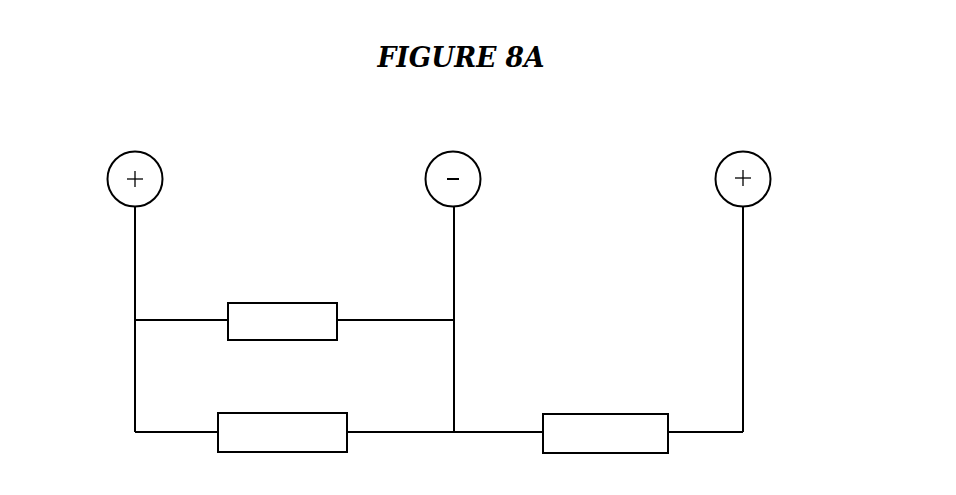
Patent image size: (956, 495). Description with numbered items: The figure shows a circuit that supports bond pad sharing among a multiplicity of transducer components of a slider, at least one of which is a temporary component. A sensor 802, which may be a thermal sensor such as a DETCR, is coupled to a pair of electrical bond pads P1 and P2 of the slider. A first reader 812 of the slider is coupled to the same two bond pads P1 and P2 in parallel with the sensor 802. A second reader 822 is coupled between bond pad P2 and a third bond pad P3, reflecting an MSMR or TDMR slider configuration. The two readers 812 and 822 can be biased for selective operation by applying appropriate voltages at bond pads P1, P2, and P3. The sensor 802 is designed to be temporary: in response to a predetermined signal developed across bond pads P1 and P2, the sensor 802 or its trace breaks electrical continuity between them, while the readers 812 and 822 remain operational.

The first electrical bond pad P1 is at (108, 172).
The second electrical bond pad P2 is at (481, 172).
The third bond pad P3 is at (771, 172).
The sensor 802 is at (286, 302).
The first reader 812 is at (292, 412).
The second reader 822 is at (610, 413).